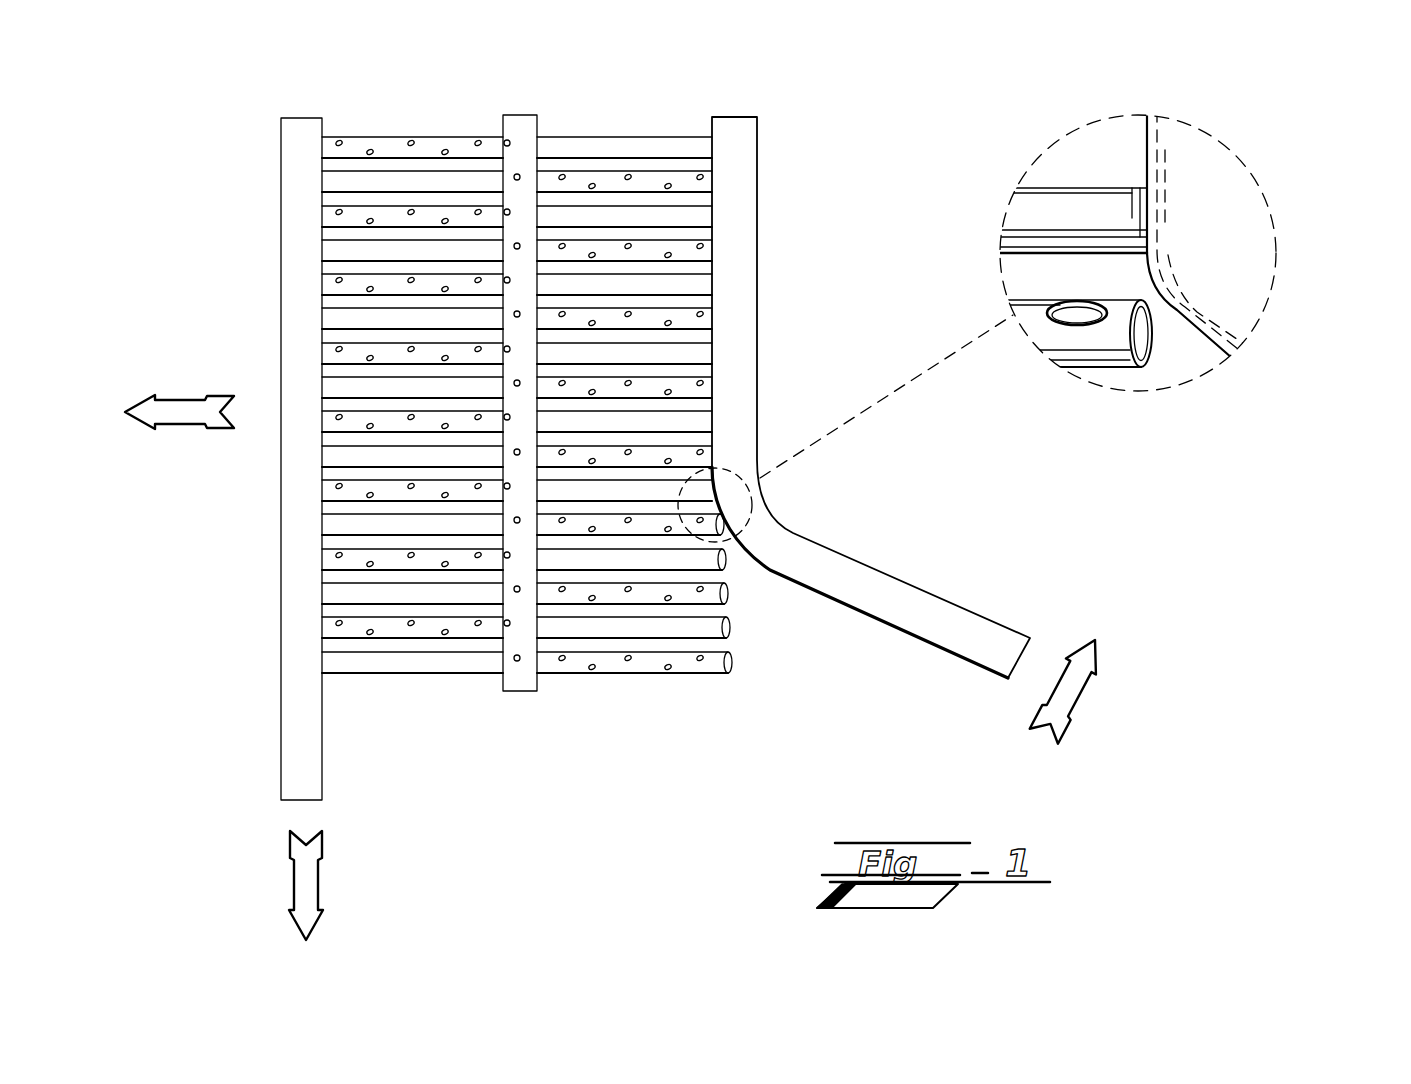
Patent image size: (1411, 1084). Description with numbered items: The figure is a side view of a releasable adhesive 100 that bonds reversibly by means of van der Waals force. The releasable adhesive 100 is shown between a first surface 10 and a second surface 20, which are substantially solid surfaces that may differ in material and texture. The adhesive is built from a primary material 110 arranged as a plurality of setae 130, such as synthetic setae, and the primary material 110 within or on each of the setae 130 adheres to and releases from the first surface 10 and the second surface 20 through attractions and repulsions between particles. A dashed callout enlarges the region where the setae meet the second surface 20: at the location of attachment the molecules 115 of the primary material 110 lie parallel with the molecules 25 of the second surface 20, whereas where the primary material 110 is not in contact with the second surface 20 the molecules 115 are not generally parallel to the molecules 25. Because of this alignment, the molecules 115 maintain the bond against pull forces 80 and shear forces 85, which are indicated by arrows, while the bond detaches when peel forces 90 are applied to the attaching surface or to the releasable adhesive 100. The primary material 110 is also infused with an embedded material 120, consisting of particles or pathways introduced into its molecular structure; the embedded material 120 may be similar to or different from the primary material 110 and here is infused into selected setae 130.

The releasable adhesive 100 is at (208, 221).
The first surface 10 is at (300, 562).
The setae 130 is at (636, 138).
The second surface 20 is at (757, 262).
The molecules of the second surface 25 is at (1167, 165).
The primary material 110 is at (420, 666).
The molecules of the primary material 115 is at (1138, 203).
The embedded material 120 is at (650, 670).
The pull forces 80 is at (182, 422).
The shear forces 85 is at (319, 878).
The peel forces 90 is at (1083, 688).